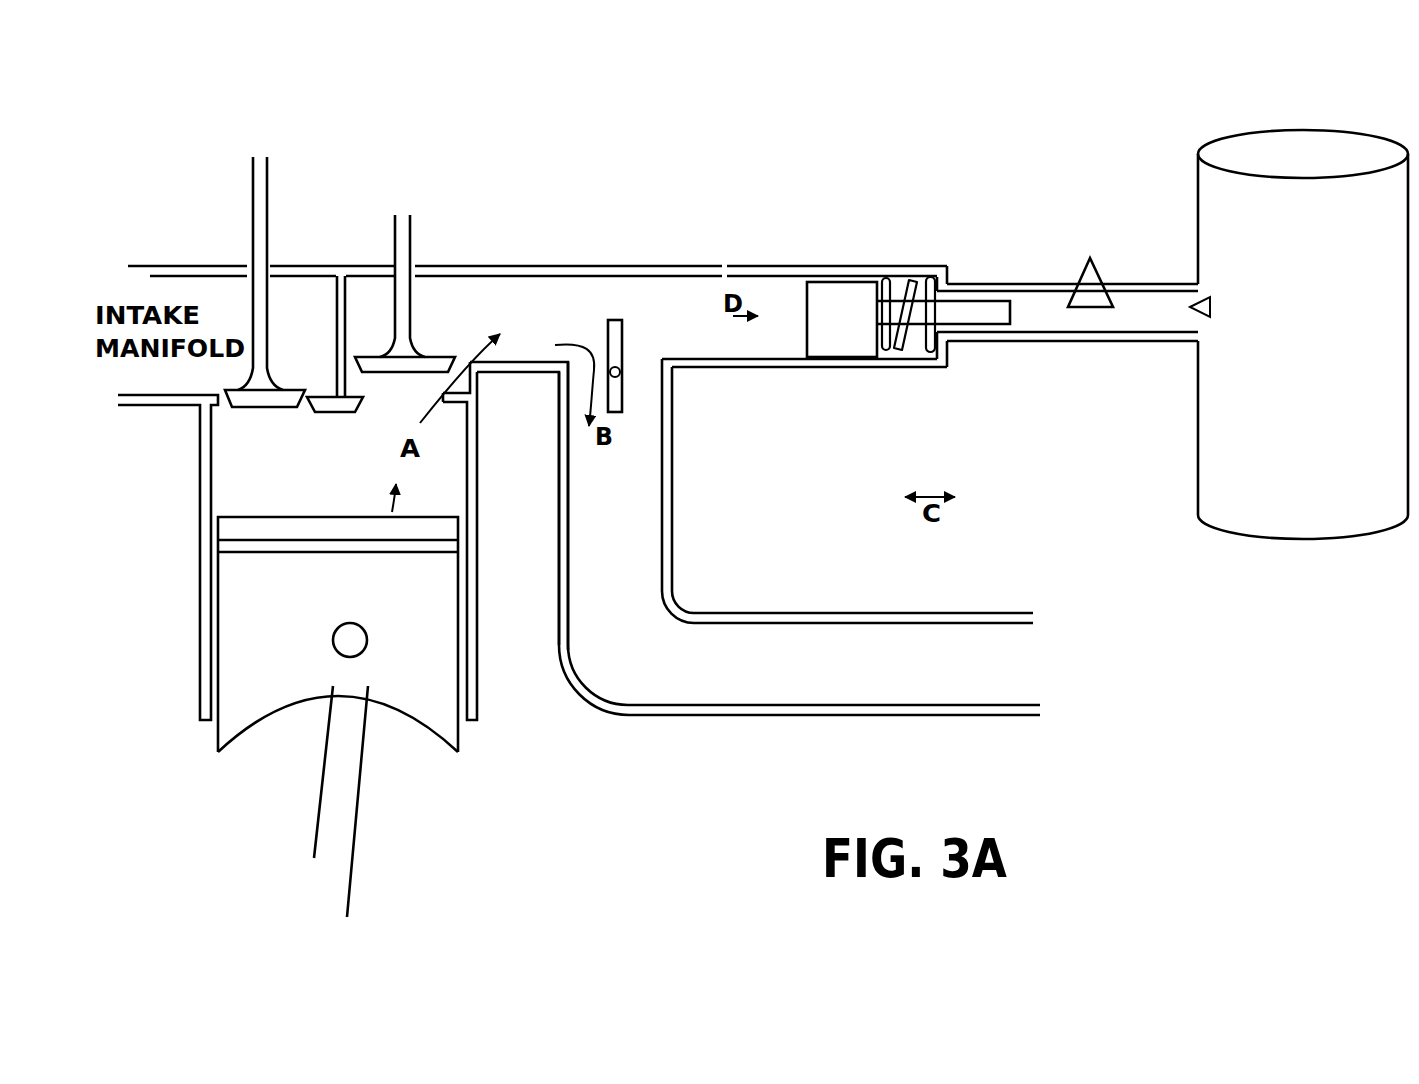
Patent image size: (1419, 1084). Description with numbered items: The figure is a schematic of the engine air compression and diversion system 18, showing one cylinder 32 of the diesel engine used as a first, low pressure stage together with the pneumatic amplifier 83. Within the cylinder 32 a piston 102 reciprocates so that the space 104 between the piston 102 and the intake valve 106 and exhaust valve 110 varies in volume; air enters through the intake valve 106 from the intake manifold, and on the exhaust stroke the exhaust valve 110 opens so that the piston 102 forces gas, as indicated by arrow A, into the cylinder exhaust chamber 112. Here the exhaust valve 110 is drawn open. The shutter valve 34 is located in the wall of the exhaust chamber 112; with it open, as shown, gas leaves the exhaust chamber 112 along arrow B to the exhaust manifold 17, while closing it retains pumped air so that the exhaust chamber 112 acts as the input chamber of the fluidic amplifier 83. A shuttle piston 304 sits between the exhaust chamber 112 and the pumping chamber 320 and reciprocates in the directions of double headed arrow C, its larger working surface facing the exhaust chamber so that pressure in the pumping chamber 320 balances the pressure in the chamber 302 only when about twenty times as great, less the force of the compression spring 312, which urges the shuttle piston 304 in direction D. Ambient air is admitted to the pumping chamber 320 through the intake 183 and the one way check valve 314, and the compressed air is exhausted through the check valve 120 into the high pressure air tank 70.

The engine air compression and diversion system 18 is at (700, 197).
The fluidic amplifier 83 is at (803, 228).
The intake valve 106 is at (285, 387).
The exhaust valve 110 is at (427, 357).
The space 104 is at (307, 479).
The exhaust chamber 112 is at (596, 331).
The shutter valve 34 is at (622, 393).
The chamber 302 is at (768, 347).
The exhaust manifold 17 is at (981, 653).
The shuttle piston 304 is at (852, 340).
The compression spring 312 is at (912, 282).
The one way check valve 314 is at (1073, 283).
The pumping chamber 320 is at (1101, 322).
The intake 183 is at (1105, 268).
The check valve 120 is at (1212, 307).
The high pressure air tank 70 is at (1218, 496).
The cylinder 32 is at (478, 670).
The piston 102 is at (262, 672).